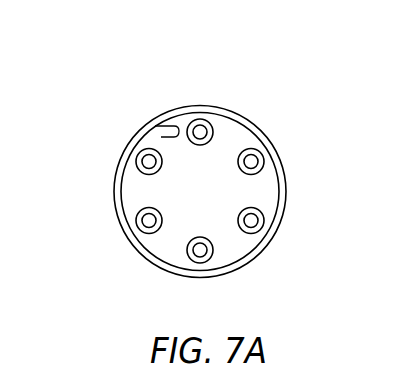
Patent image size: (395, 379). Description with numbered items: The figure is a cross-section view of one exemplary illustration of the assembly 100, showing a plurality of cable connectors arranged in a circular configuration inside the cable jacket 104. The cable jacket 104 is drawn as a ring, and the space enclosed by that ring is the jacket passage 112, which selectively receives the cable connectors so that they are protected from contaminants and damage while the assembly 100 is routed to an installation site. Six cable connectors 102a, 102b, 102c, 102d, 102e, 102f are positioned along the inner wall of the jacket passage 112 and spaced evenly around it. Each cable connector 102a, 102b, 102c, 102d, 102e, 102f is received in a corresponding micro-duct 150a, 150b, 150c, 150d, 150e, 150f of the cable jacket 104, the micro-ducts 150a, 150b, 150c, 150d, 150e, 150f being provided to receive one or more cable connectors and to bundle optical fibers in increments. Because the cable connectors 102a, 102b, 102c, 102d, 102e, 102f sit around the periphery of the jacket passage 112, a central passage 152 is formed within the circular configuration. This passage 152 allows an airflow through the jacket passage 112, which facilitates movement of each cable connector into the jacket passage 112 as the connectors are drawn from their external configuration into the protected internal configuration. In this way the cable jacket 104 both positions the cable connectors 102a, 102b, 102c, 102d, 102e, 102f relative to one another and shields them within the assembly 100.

The assembly 100 is at (197, 159).
The cable jacket 104 is at (183, 103).
The jacket passage 112 is at (153, 133).
The passage 152 is at (203, 193).
The micro-duct 150a is at (211, 121).
The micro-duct 150b is at (261, 151).
The micro-duct 150c is at (266, 215).
The micro-duct 150d is at (217, 263).
The micro-duct 150e is at (145, 236).
The micro-duct 150f is at (148, 148).
The cable connector 102a is at (214, 129).
The cable connector 102b is at (263, 173).
The cable connector 102c is at (251, 238).
The cable connector 102d is at (191, 261).
The cable connector 102e is at (135, 218).
The cable connector 102f is at (135, 161).